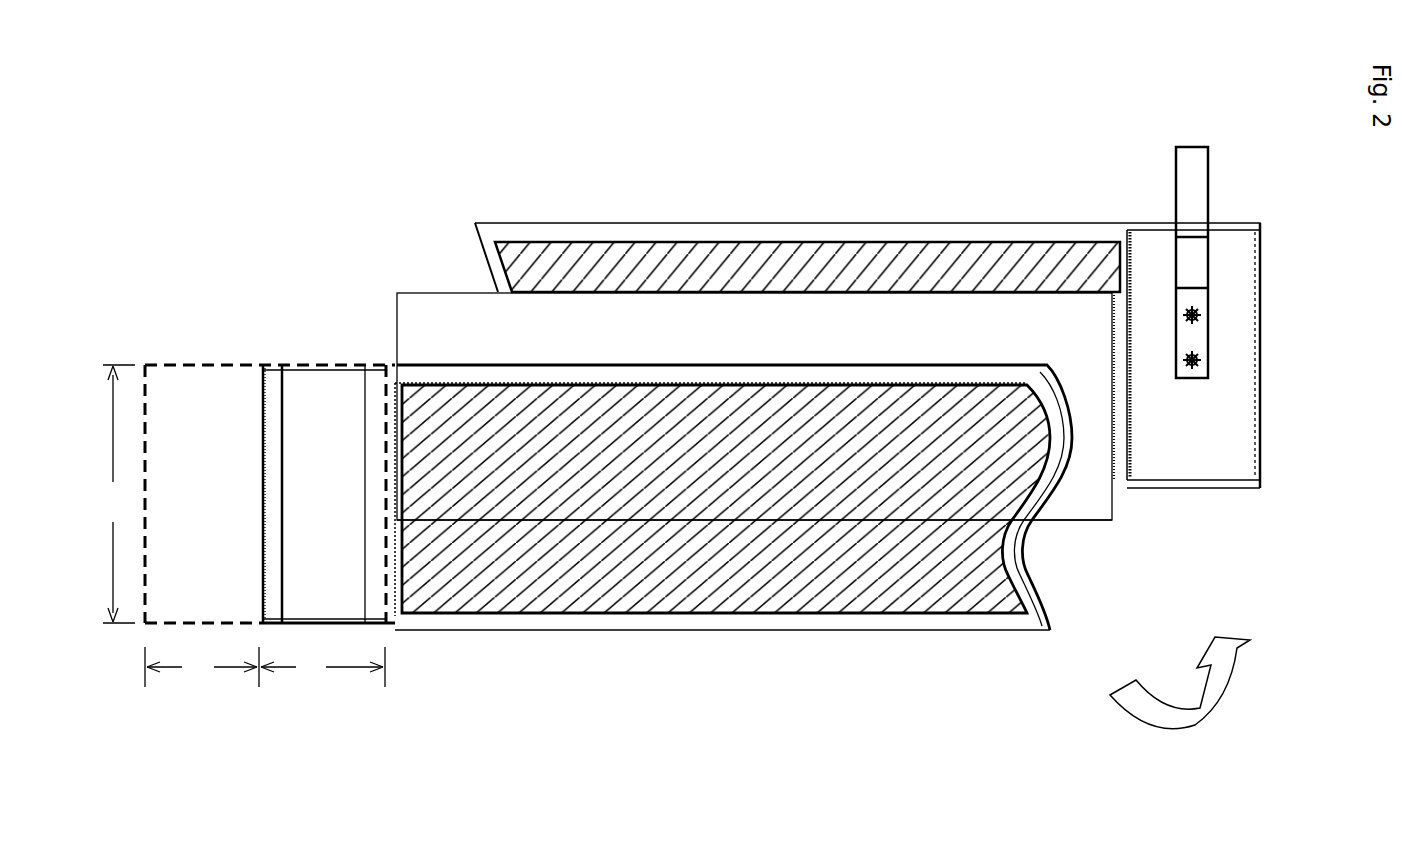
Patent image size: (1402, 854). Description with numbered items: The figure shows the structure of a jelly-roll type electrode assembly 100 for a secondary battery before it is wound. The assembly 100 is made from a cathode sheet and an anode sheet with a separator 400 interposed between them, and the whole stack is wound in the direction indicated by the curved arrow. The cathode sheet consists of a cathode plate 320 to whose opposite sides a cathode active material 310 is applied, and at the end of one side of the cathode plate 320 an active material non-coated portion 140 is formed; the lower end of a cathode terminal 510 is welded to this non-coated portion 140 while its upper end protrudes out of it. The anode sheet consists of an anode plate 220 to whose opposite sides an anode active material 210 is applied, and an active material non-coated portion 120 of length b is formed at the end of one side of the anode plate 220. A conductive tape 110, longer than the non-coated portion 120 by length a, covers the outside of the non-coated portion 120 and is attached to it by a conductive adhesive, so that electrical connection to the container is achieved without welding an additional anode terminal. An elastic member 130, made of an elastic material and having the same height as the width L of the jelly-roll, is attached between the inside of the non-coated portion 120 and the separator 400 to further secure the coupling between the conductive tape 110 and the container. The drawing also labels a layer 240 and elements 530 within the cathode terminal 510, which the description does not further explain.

The jelly-roll type electrode assembly 100 is at (264, 85).
The conductive tape 110 is at (181, 355).
The active material non-coated portion 120 is at (275, 355).
The elastic member 130 is at (332, 358).
The active material non-coated portion 140 is at (1197, 458).
The anode active material 210 is at (703, 583).
The anode plate 220 is at (1000, 630).
The liner layer 240 is at (407, 613).
The cathode active material 310 is at (662, 255).
The cathode plate 320 is at (748, 240).
The separator 400 is at (1082, 500).
The cathode terminal 510 is at (1190, 165).
The fastening elements 530 is at (1205, 313).